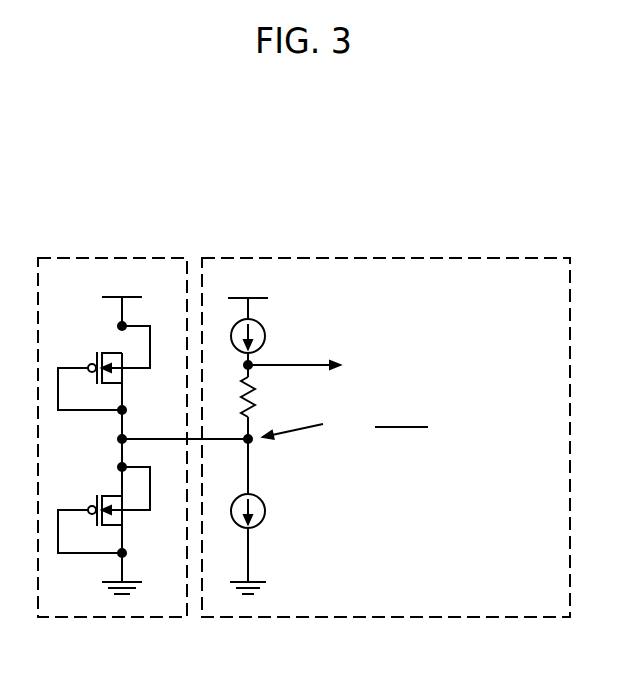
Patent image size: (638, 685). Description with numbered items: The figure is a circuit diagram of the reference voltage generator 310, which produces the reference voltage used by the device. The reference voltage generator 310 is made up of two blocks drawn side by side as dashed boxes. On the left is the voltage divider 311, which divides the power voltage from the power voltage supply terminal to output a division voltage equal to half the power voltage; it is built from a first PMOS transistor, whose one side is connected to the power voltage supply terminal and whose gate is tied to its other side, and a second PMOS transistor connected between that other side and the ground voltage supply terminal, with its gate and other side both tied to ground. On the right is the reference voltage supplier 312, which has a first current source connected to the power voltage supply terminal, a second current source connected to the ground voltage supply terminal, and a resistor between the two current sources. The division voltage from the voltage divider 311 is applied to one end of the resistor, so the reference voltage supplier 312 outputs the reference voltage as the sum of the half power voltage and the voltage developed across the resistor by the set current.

The reference voltage generator 310 is at (441, 195).
The voltage divider 311 is at (135, 258).
The reference voltage supplier 312 is at (521, 258).